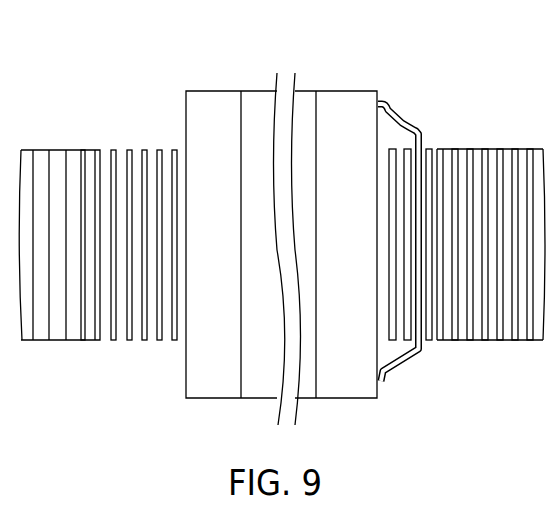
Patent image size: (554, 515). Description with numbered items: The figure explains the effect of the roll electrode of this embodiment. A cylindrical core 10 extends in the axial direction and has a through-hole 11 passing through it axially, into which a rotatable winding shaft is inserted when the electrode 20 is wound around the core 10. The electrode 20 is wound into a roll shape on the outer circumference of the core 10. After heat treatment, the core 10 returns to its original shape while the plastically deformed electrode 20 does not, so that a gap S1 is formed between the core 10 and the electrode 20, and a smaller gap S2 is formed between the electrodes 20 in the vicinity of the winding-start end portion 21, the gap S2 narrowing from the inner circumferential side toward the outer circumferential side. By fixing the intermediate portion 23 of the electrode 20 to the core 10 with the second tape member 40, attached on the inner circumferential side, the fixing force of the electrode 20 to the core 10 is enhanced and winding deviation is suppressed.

The core 10 is at (205, 91).
The through-hole 11 is at (307, 91).
The electrode 20 is at (58, 156).
The winding-start end portion 21 is at (384, 330).
The intermediate portion 23 is at (409, 330).
The second tape member 40 is at (423, 132).
The gap S1 is at (182, 156).
The gap S2 is at (163, 341).